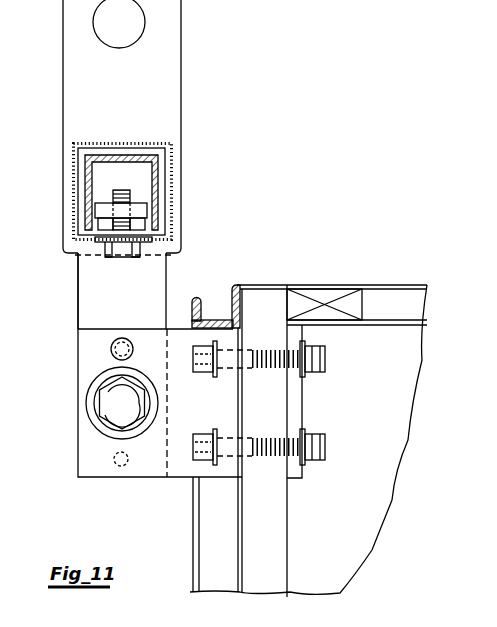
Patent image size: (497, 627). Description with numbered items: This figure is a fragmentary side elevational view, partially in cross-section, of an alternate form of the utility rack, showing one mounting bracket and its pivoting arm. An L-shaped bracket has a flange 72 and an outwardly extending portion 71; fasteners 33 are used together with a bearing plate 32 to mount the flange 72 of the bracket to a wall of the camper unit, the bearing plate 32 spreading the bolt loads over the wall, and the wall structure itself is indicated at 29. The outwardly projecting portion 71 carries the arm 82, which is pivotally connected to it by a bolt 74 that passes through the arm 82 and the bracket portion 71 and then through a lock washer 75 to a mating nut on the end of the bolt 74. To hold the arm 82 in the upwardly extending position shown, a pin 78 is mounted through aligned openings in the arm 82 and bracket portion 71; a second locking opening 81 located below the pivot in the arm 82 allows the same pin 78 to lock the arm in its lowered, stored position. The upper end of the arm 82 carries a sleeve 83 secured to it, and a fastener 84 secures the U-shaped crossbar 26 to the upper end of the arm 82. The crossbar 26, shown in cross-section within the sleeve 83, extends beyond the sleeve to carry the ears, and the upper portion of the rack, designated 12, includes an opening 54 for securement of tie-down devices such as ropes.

The upper post 12 is at (62, 52).
The opening 54 is at (128, 27).
The crossbar 26 is at (133, 157).
The sleeve 83 is at (159, 190).
The fastener 84 is at (121, 276).
The arm 82 is at (131, 312).
The pin 78 is at (111, 349).
The bolt 74 is at (112, 398).
The lock washer 75 is at (102, 428).
The second locking opening 81 is at (118, 466).
The outwardly extending portion 71 is at (143, 463).
The flange 72 is at (204, 438).
The fasteners 33 is at (325, 348).
The bearing plate 32 is at (302, 398).
The frame member 29 is at (265, 528).